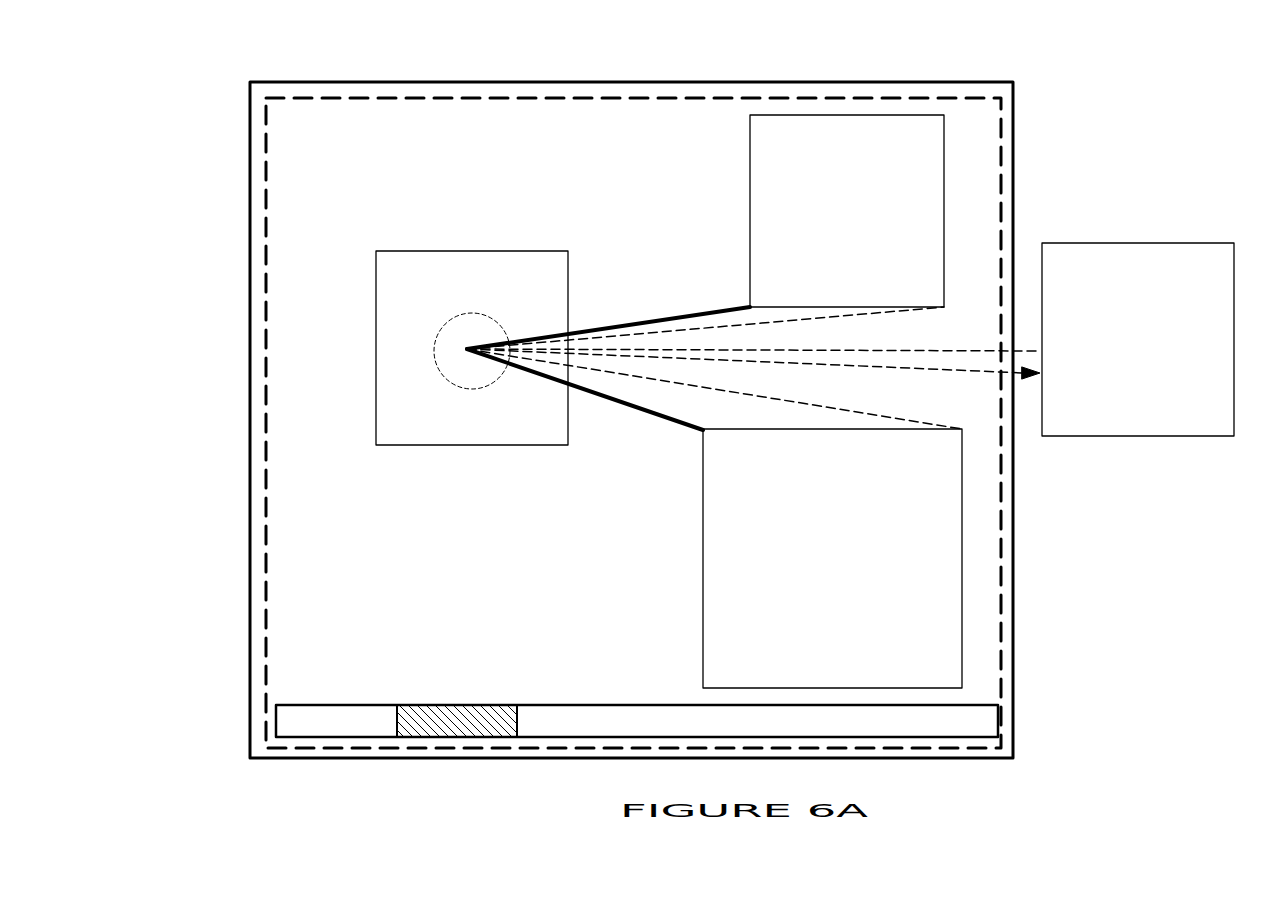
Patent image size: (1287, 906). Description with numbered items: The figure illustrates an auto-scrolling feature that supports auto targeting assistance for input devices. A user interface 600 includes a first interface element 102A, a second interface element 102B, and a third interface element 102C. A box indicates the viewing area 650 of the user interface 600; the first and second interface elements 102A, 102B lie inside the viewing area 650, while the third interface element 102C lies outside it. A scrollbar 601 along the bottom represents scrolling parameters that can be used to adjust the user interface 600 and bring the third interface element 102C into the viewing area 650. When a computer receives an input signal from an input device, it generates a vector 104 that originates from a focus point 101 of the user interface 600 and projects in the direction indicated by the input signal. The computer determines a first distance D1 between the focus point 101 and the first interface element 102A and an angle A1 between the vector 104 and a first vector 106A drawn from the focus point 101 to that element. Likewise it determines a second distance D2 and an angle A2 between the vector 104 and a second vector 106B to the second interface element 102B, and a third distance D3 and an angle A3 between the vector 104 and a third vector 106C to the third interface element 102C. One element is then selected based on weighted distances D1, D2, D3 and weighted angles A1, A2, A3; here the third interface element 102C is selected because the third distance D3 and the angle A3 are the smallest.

The user interface 600 is at (310, 758).
The viewing area 650 is at (266, 500).
The focus point 101 is at (442, 337).
The first interface element 102A is at (750, 250).
The second interface element 102B is at (703, 663).
The third interface element 102C is at (1175, 243).
The first vector 106A is at (668, 332).
The second vector 106B is at (668, 383).
The third vector 106C is at (895, 352).
The vector 104 is at (968, 372).
The scrollbar 601 is at (407, 705).
The first distance D1 is at (717, 312).
The second distance D2 is at (680, 427).
The third distance D3 is at (1041, 122).
The angle A1 is at (845, 362).
The angle A2 is at (848, 365).
The angle A3 is at (944, 370).